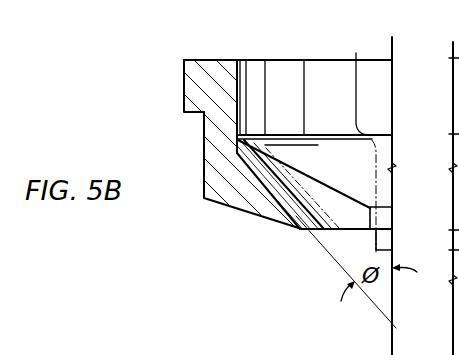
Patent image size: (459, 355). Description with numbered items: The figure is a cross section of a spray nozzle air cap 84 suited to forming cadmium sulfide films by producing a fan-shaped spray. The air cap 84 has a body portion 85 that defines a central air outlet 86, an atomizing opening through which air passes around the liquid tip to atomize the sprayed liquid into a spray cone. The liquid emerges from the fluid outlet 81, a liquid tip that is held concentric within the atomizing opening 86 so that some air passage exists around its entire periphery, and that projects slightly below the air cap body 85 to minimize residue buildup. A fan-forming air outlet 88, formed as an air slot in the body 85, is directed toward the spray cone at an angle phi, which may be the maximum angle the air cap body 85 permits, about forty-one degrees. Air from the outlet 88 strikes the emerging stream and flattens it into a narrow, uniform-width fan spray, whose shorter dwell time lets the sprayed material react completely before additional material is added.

The fluid outlet 81 is at (375, 240).
The air cap 84 is at (304, 56).
The air cap body 85 is at (208, 58).
The central air outlet 86 is at (365, 201).
The fan-forming air outlet 88 is at (252, 174).